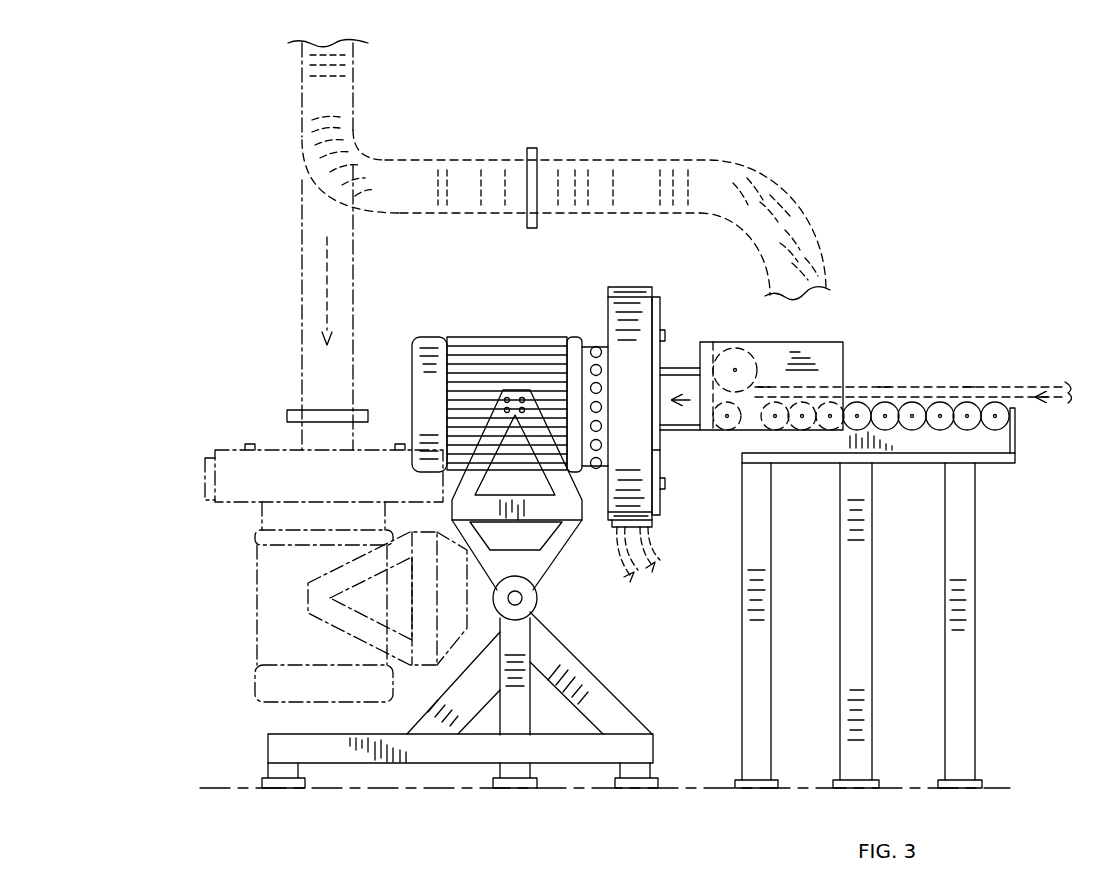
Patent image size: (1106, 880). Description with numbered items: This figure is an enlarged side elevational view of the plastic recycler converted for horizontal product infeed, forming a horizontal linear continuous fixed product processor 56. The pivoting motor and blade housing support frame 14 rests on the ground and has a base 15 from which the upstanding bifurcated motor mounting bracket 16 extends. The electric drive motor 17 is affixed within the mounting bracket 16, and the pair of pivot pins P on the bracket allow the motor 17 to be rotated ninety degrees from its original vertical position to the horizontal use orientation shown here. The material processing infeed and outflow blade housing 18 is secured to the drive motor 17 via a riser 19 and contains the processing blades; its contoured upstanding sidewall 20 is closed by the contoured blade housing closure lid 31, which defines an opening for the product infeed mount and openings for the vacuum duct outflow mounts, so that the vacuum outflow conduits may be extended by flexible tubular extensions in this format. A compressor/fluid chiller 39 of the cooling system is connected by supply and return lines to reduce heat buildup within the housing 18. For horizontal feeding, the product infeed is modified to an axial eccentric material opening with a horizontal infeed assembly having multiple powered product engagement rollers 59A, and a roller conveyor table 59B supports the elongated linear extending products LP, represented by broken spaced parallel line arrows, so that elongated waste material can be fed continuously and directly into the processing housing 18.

The pivoting motor and blade housing support frame 14 is at (612, 700).
The base 15 is at (268, 750).
The motor mounting bracket 16 is at (325, 618).
The electric drive motor 17 is at (482, 347).
The material processing infeed and outflow blade housing 18 is at (202, 470).
The riser 19 is at (591, 345).
The contoured upstanding sidewall 20 is at (650, 452).
The blade housing closure lid 31 is at (660, 315).
The compressor/fluid chiller 39 is at (654, 555).
The horizontal linear continuous fixed product processor 56 is at (614, 243).
The powered product engagement rollers 59A is at (830, 412).
The roller conveyor table 59B is at (1002, 440).
The elongated linear extending products LP is at (1002, 387).
The pivot pins P is at (520, 598).